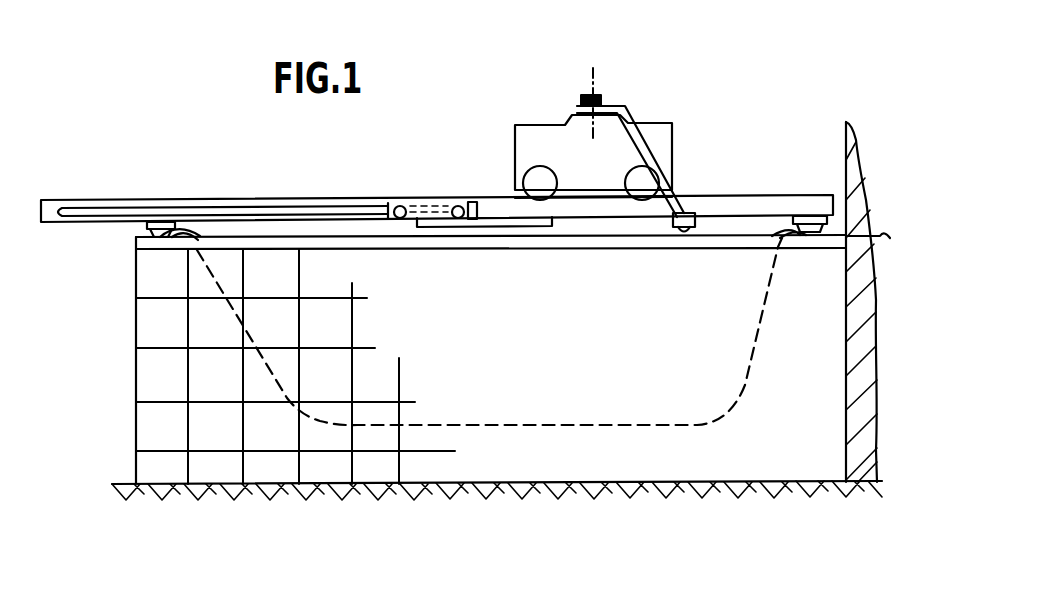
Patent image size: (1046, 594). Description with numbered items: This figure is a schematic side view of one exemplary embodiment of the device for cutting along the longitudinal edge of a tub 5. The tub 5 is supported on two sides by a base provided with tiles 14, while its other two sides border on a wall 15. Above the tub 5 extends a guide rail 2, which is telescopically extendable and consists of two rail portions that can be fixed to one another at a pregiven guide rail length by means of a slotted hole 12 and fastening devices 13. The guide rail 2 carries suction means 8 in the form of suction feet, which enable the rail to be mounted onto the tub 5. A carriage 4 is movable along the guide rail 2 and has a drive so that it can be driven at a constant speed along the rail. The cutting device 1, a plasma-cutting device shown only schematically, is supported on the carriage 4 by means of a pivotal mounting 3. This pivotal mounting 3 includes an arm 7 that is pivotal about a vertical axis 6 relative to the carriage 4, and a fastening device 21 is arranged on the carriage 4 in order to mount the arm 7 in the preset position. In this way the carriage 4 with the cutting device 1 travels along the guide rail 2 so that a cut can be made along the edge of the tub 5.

The cutting device 1 is at (691, 207).
The guide rail 2 is at (50, 208).
The pivotal mounting 3 is at (615, 95).
The carriage 4 is at (548, 145).
The tub 5 is at (470, 428).
The vertical axis 6 is at (581, 63).
The arm 7 is at (640, 108).
The suction means 8 is at (147, 235).
The slotted hole 12 is at (197, 212).
The fastening devices 13 is at (400, 219).
The tiles 14 is at (218, 430).
The wall 15 is at (866, 365).
The fastening device 21 is at (597, 95).